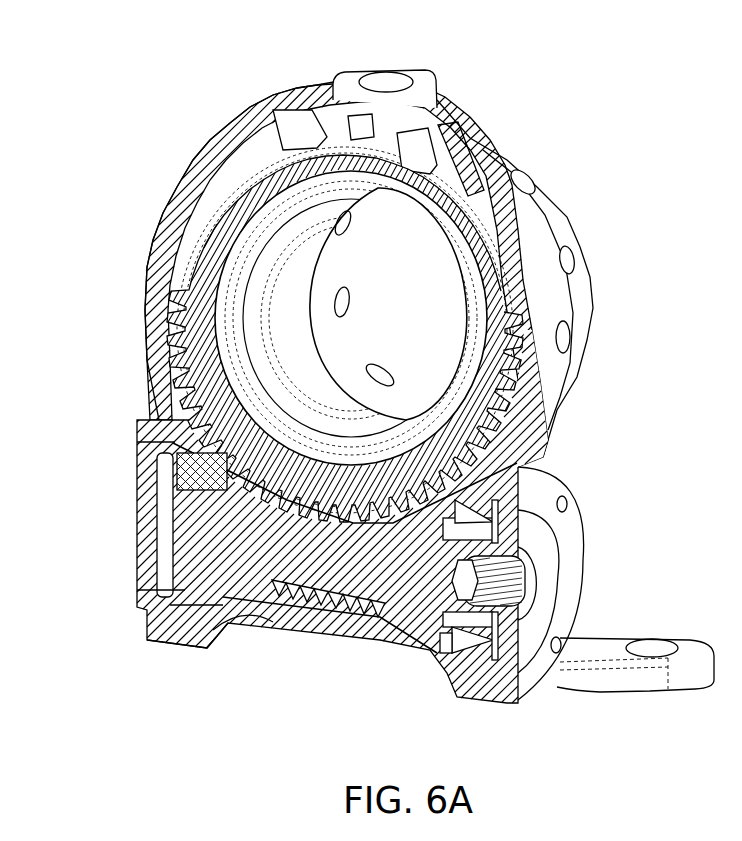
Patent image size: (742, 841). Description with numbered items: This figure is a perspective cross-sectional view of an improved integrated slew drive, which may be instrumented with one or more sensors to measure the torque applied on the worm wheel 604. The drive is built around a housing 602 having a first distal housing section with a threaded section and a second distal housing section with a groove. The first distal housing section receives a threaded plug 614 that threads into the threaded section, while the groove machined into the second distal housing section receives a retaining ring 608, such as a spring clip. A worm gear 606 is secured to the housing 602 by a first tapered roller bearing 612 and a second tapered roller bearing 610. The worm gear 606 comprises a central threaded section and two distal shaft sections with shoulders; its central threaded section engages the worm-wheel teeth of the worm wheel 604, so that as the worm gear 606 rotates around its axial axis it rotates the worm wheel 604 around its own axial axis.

The housing 602 is at (503, 207).
The worm wheel 604 is at (505, 415).
The worm gear 606 is at (343, 577).
The retaining ring 608 is at (520, 530).
The second tapered roller bearing 610 is at (457, 690).
The first tapered roller bearing 612 is at (213, 630).
The threaded plug 614 is at (160, 643).